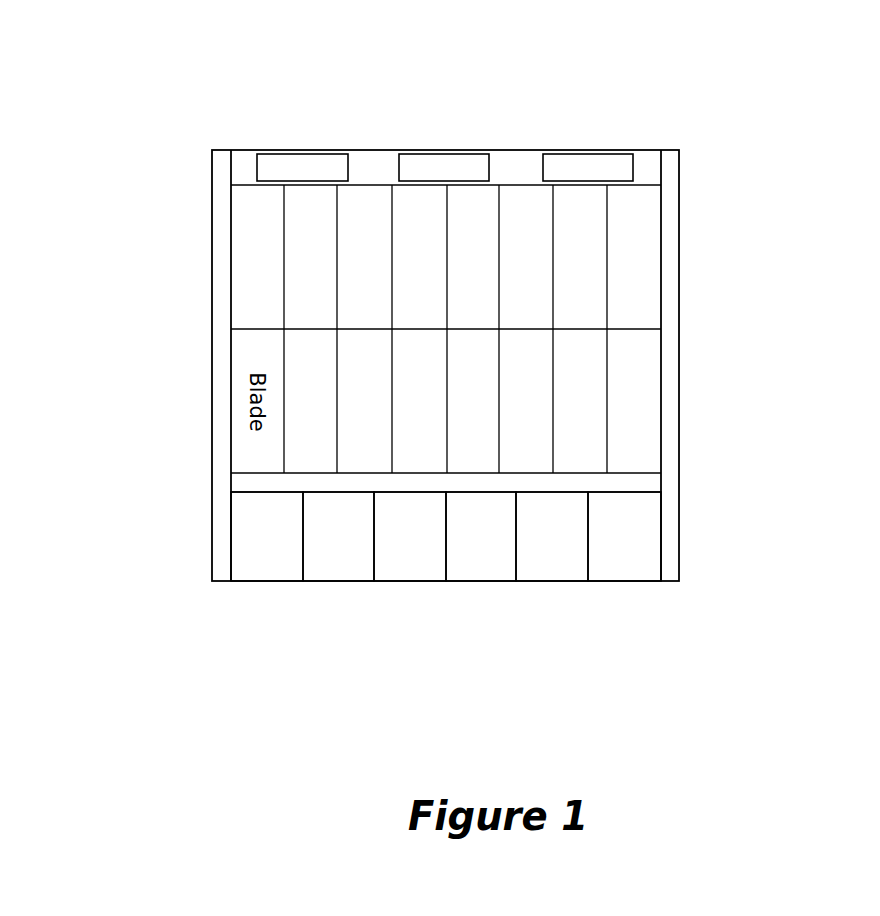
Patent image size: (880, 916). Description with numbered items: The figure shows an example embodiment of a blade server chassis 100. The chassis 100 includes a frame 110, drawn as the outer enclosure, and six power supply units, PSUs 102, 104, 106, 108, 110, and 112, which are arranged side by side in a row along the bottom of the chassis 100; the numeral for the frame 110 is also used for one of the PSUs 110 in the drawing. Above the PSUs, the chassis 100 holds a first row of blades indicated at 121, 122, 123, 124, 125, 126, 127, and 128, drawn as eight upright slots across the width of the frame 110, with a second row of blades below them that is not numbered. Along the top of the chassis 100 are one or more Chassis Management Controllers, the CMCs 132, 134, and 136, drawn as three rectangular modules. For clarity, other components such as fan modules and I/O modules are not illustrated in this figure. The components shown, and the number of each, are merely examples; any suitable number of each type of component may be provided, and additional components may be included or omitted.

The blade server chassis 100 is at (727, 768).
The PSU 102 is at (265, 581).
The PSU 104 is at (337, 581).
The PSU 106 is at (406, 581).
The PSU 108 is at (480, 581).
The frame 110 is at (552, 581).
The PSU 112 is at (623, 581).
The blade 121 is at (257, 312).
The blade 122 is at (308, 282).
The blade 123 is at (365, 232).
The blade 124 is at (418, 203).
The blade 125 is at (472, 203).
The blade 126 is at (527, 236).
The blade 127 is at (581, 281).
The blade 128 is at (635, 312).
The Chassis Management Controller 132 is at (302, 166).
The Chassis Management Controller 134 is at (448, 166).
The Chassis Management Controller 136 is at (587, 166).